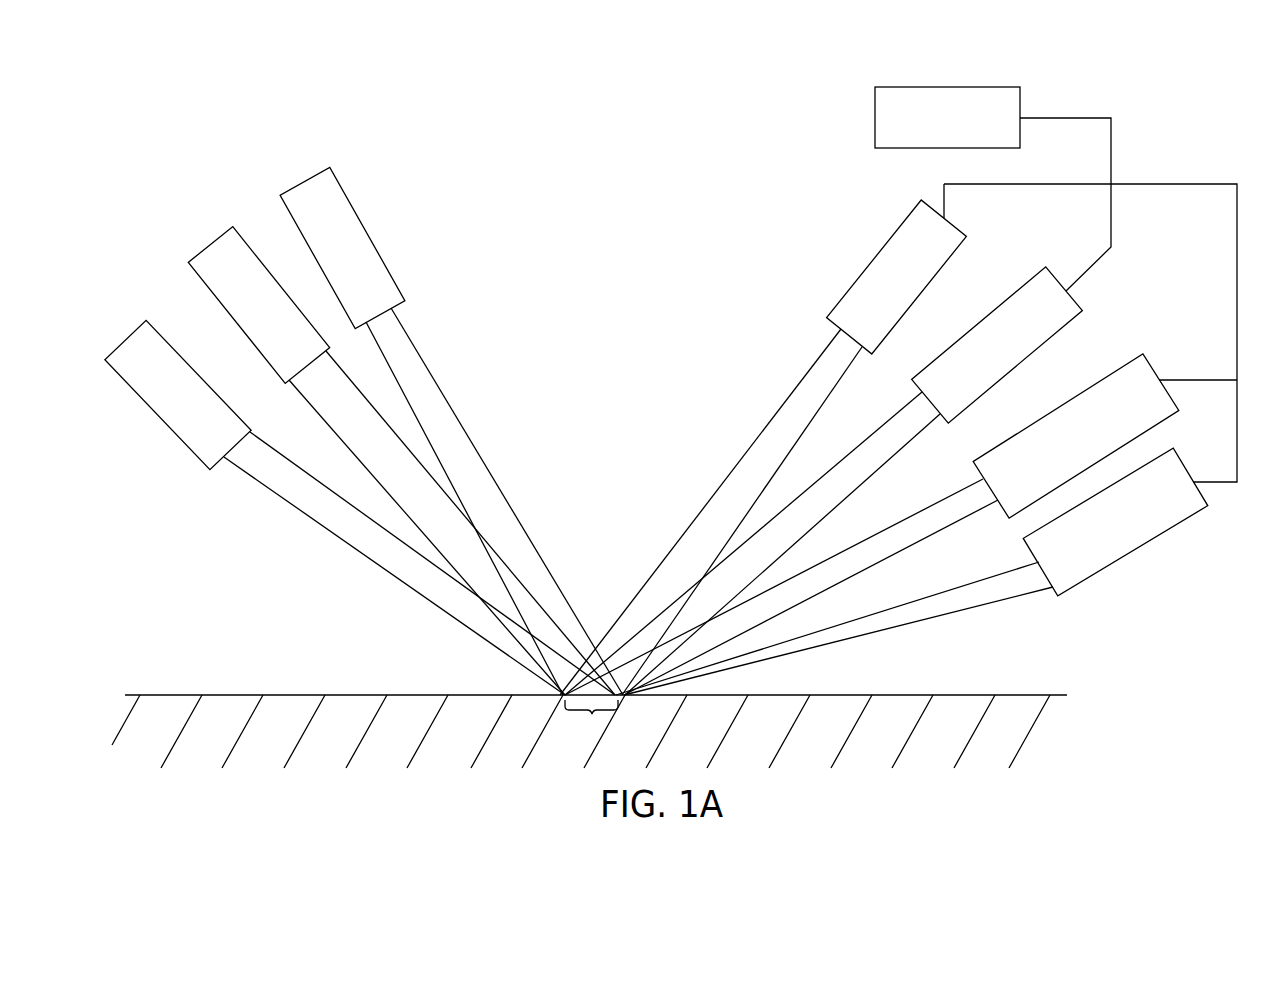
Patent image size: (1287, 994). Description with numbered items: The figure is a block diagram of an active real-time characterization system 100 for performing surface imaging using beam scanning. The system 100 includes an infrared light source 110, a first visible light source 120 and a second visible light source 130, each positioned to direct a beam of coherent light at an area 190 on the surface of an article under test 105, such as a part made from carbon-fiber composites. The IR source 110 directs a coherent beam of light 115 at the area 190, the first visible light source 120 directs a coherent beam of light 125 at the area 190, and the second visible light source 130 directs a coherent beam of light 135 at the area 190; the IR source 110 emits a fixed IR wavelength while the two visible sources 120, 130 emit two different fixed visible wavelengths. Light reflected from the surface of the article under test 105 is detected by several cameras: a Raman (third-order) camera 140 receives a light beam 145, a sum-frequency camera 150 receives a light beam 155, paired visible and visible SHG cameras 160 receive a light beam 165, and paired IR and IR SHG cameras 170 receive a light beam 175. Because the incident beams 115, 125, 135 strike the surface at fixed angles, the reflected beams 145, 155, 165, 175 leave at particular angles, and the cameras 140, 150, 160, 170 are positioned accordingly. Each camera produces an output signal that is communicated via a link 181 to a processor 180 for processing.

The active real-time characterization system 100 is at (663, 77).
The article under test 105 is at (1052, 697).
The infrared light source 110 is at (163, 334).
The coherent beam of light 115 is at (287, 512).
The first visible light source 120 is at (233, 227).
The coherent beam of light 125 is at (353, 453).
The second visible light source 130 is at (330, 168).
The coherent beam of light 135 is at (423, 352).
The Raman (third-order) camera 140 is at (863, 269).
The light beam 145 is at (801, 379).
The sum-frequency camera 150 is at (1045, 266).
The light beam 155 is at (882, 422).
The paired visible and visible second harmonic generation cameras 160 is at (1142, 355).
The light beam 165 is at (920, 510).
The paired IR and IR second harmonic generation cameras 170 is at (1188, 468).
The light beam 175 is at (945, 588).
The processor 180 is at (875, 120).
The link 181 is at (1073, 118).
The area 190 is at (591, 718).